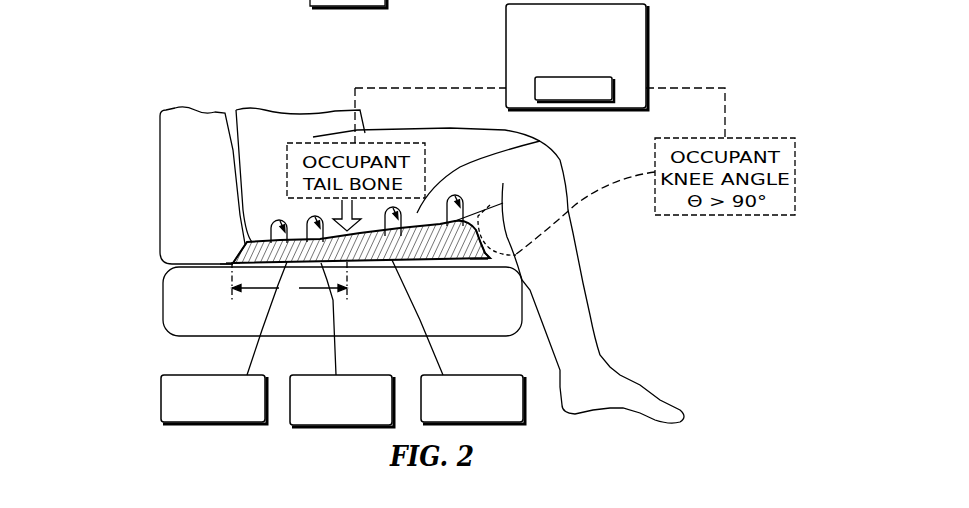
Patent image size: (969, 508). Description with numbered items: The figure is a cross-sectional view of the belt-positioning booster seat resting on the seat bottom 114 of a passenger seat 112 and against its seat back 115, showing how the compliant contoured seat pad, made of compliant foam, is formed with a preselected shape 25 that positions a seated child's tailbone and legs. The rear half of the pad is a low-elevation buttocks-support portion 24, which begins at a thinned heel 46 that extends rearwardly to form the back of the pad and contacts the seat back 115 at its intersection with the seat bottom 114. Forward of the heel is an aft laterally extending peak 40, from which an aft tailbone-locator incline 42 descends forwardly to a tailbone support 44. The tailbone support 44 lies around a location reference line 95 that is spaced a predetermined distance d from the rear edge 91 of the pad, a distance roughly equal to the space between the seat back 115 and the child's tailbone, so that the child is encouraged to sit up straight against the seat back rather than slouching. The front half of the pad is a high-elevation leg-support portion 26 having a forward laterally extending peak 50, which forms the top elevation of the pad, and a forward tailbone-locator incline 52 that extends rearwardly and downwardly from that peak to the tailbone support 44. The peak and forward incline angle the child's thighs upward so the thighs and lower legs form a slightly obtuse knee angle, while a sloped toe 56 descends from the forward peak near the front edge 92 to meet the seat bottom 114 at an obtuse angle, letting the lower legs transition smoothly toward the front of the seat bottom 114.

The passenger seat 112 is at (216, 185).
The seat back 115 is at (170, 146).
The seat bottom 114 is at (167, 303).
The low-elevation buttocks-support portion 24 is at (292, 218).
The preselected shape 25 is at (615, 84).
The high-elevation leg-support portion 26 is at (426, 208).
The aft laterally extending peak 40 is at (242, 230).
The aft tailbone-locator incline 42 is at (172, 375).
The tailbone support 44 is at (318, 375).
The thinned heel 46 is at (230, 247).
The forward laterally extending peak 50 is at (453, 260).
The forward tailbone-locator incline 52 is at (508, 375).
The sloped toe 56 is at (497, 259).
The rear edge 91 is at (237, 263).
The front edge 92 is at (480, 263).
The location reference line 95 is at (353, 260).